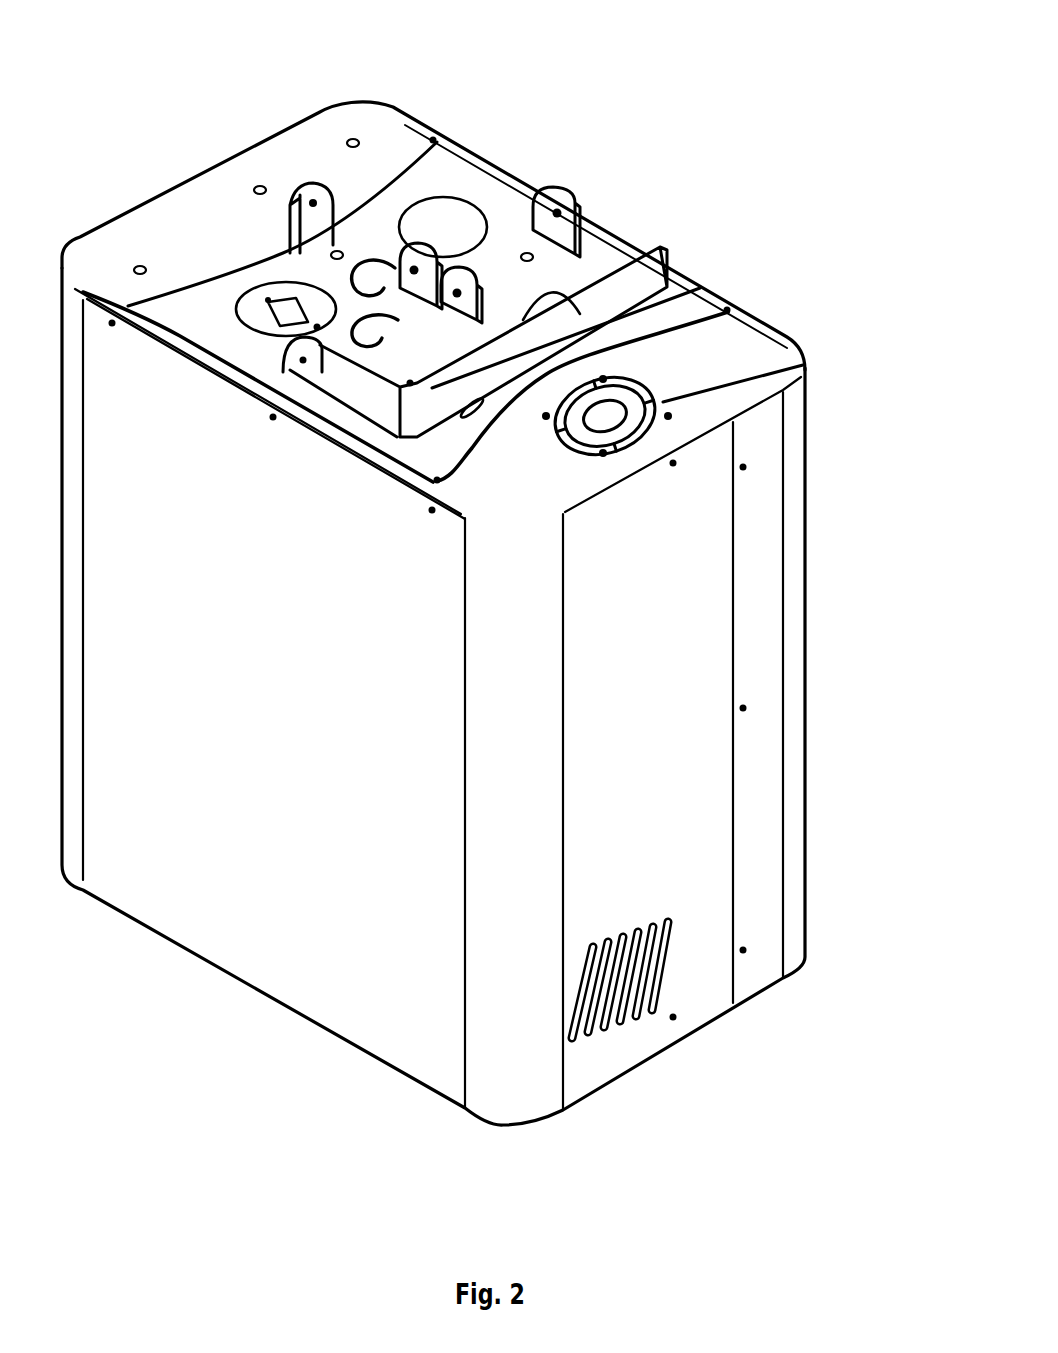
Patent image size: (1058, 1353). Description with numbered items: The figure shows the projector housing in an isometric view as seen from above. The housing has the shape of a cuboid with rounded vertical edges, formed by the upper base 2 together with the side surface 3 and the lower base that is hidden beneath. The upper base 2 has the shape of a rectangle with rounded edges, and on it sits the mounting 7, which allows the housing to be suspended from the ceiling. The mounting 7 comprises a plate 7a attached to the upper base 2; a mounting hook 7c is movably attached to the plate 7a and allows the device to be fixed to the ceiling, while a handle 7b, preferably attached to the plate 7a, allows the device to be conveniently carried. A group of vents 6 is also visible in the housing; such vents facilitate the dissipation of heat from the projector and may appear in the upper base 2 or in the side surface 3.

The upper base 2 is at (290, 163).
The side surface 3 is at (678, 667).
The group of vents 6 is at (632, 407).
The mounting 7 is at (503, 130).
The plate 7a is at (677, 300).
The handle 7b is at (610, 233).
The mounting hook 7c is at (398, 283).